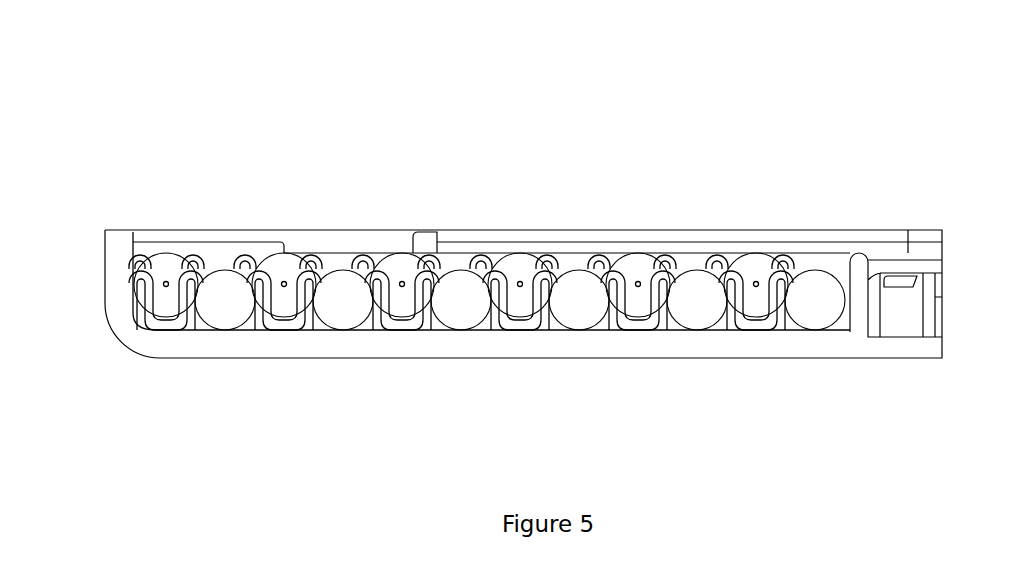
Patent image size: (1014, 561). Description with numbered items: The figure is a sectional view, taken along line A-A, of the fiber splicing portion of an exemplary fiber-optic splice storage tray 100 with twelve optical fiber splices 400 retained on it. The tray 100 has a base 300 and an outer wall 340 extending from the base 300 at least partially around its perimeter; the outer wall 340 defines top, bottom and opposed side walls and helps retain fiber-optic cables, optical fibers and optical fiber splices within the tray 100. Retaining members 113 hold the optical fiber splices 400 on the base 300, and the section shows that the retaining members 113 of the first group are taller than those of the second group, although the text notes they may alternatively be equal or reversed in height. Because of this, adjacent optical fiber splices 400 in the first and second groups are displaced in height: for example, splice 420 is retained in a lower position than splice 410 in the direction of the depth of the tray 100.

The tray 100 is at (538, 110).
The retaining members 113 is at (431, 262).
The base 300 is at (282, 347).
The outer wall 340 is at (127, 282).
The optical fiber splices 400 is at (285, 273).
The splice 410 is at (755, 307).
The splice 420 is at (818, 312).